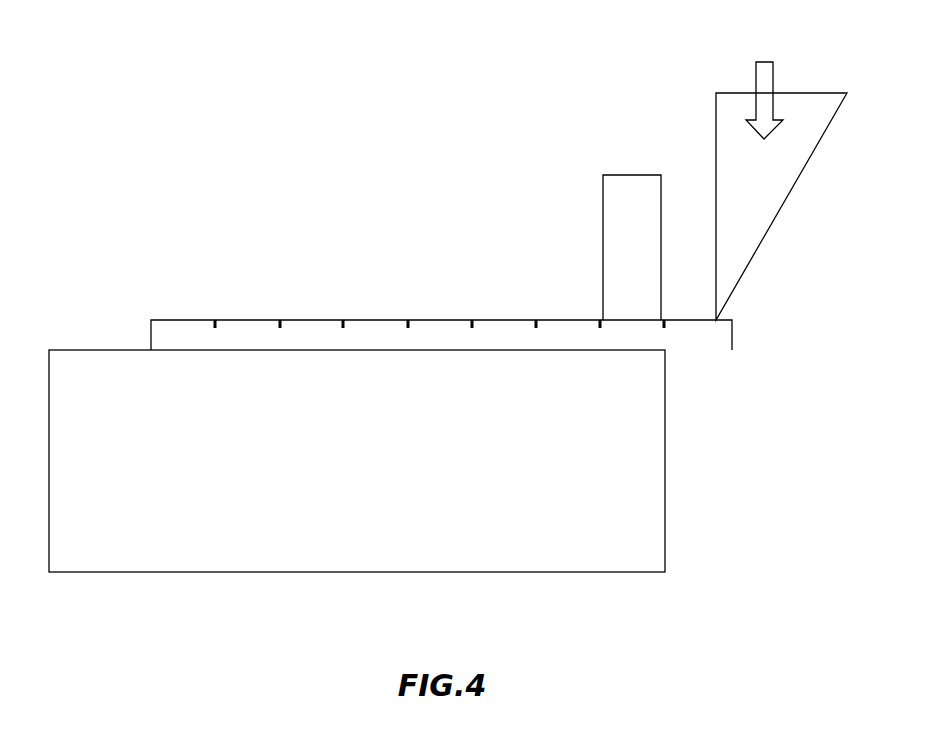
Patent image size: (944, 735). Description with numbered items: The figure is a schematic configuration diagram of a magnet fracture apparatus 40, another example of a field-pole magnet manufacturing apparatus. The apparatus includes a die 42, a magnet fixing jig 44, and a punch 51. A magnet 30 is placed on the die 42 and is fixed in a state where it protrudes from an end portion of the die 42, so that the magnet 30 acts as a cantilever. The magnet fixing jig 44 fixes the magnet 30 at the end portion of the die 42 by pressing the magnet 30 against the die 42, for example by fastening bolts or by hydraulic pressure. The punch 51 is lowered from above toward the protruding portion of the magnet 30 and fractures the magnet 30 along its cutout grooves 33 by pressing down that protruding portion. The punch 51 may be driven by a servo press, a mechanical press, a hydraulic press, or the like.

The magnet 30 is at (437, 333).
The cutout grooves 33 is at (213, 327).
The magnet fracture apparatus 40 is at (390, 172).
The die 42 is at (640, 503).
The magnet fixing jig 44 is at (624, 193).
The punch 51 is at (726, 118).